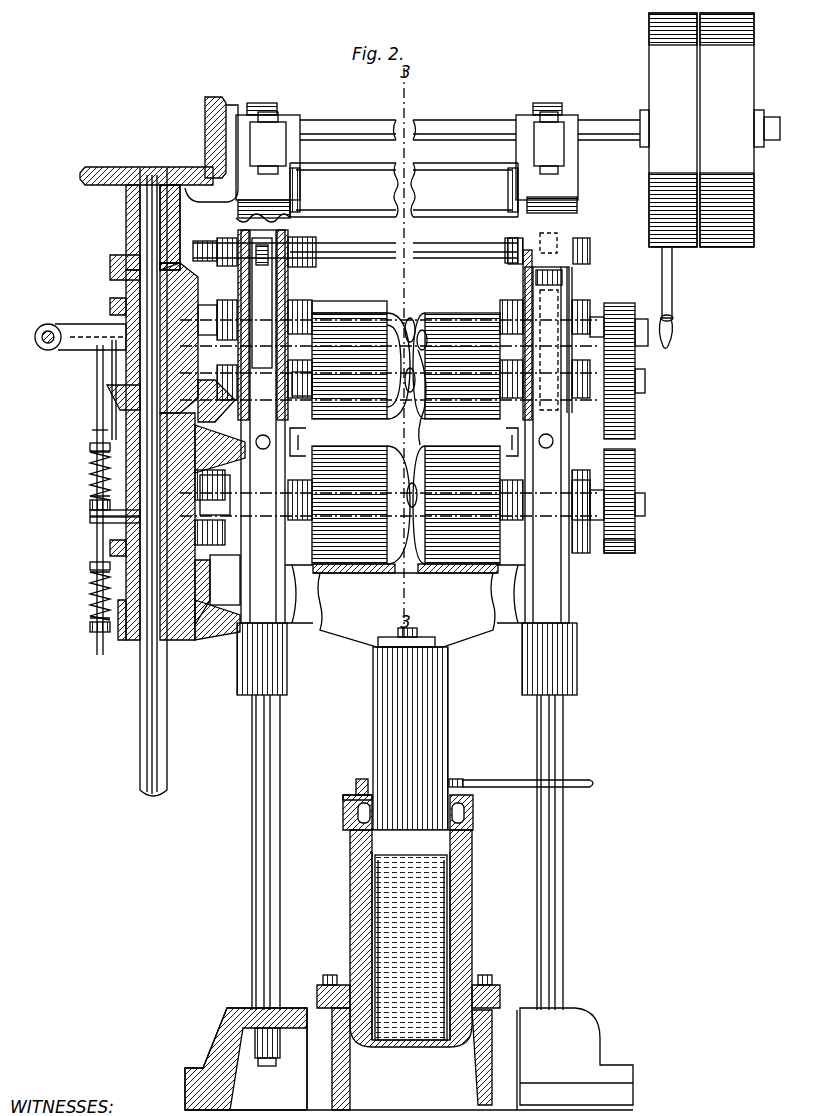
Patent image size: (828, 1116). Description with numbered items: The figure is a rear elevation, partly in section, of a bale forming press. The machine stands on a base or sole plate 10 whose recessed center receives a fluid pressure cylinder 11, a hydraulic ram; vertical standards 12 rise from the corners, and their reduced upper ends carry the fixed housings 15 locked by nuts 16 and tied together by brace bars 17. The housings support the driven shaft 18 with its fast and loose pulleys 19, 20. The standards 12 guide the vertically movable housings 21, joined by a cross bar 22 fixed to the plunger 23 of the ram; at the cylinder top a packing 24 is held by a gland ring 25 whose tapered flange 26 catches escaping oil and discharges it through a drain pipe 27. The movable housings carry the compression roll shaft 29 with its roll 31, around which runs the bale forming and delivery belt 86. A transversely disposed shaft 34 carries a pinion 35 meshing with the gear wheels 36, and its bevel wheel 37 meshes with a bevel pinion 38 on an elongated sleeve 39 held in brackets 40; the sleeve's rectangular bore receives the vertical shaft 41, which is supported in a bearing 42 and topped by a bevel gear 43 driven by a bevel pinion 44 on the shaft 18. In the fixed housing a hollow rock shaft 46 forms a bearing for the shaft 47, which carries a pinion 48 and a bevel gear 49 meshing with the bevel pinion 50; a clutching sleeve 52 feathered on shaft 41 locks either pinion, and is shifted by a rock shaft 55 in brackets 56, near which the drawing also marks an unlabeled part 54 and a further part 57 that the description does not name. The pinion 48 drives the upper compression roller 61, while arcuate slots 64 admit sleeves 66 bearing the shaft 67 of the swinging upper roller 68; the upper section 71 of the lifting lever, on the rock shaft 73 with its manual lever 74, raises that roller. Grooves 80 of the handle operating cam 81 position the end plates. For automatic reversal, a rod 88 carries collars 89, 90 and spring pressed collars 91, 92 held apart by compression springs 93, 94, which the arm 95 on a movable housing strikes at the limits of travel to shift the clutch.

The base or sole plate 10 is at (585, 1048).
The fluid pressure cylinder 11 is at (466, 924).
The vertical standards 12 is at (258, 910).
The housings 15 is at (296, 304).
The nuts 16 is at (520, 278).
The brace bars 17 is at (404, 190).
The driven shaft 18 is at (604, 118).
The fast pulley 19 is at (673, 130).
The loose pulley 20 is at (727, 130).
The vertically movable housings 21 is at (407, 462).
The cross bar 22 is at (405, 606).
The plunger 23 is at (432, 702).
The packing 24 is at (352, 824).
The gland ring 25 is at (343, 797).
The tapered flange 26 is at (358, 778).
The drain pipe 27 is at (590, 780).
The compression roll shaft 29 is at (428, 498).
The compression roll 31 is at (349, 505).
The transversely disposed shaft 34 is at (646, 528).
The pinion 35 is at (640, 548).
The gear wheels 36 is at (636, 480).
The bevel wheel 37 is at (192, 603).
The bevel pinion 38 is at (93, 481).
The elongated sleeve 39 is at (110, 548).
The brackets 40 is at (232, 462).
The vertical shaft 41 is at (142, 718).
The bearing 42 is at (126, 214).
The bevel gear 43 is at (128, 167).
The bevel pinion 44 is at (212, 100).
The hollow rock shaft 46 is at (424, 318).
The transversely disposed shaft 47 is at (414, 397).
The pinion 48 is at (622, 310).
The bevel gear 49 is at (210, 312).
The bevel pinion 50 is at (110, 275).
The clutching sleeve 52 is at (112, 306).
The link 54 is at (90, 352).
The rock shaft 55 is at (44, 348).
The brackets 56 is at (114, 345).
The bevel gear 57 is at (110, 402).
The upper compression roller 61 is at (366, 301).
The slots 64 is at (302, 360).
The sleeves 66 is at (292, 384).
The shaft 67 is at (198, 432).
The upper compression roller 68 is at (501, 359).
The upper section 71 is at (293, 238).
The rock shaft 73 is at (465, 248).
The manually operable lever 74 is at (673, 306).
The grooves 80 is at (404, 435).
The handle operating cam 81 is at (285, 450).
The bale forming and bale delivery belt 86 is at (378, 574).
The rod 88 is at (97, 436).
The upper collar 89 is at (90, 455).
The lower collar 90 is at (95, 630).
The collar 91 is at (100, 516).
The collar 92 is at (92, 567).
The compression spring 93 is at (92, 503).
The compression spring 94 is at (93, 600).
The arm 95 is at (95, 522).